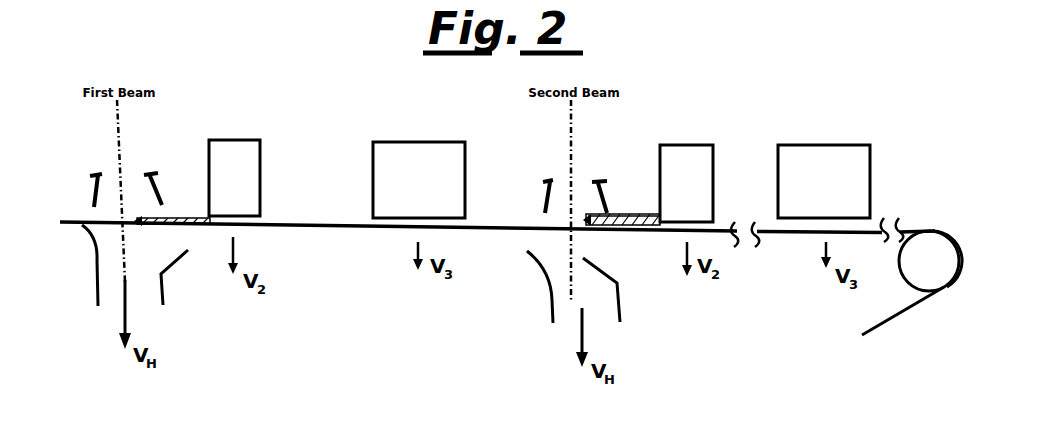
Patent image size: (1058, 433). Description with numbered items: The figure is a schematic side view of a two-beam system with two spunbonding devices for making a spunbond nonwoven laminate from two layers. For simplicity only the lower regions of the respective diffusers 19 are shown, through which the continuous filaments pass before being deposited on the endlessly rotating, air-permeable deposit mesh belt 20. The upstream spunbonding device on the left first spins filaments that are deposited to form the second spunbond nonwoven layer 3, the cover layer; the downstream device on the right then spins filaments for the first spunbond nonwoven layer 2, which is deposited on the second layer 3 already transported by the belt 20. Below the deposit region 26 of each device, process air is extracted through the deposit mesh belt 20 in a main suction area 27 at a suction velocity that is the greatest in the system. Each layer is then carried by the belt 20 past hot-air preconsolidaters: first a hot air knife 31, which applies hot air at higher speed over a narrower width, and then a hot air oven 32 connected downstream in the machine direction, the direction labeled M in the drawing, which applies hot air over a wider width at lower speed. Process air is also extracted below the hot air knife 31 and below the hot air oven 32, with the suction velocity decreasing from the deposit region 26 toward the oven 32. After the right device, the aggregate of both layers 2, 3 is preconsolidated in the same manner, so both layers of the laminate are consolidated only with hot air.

The first spunbond nonwoven layer 2 is at (633, 218).
The second spunbond nonwoven layer 3 is at (173, 219).
The diffuser 19 is at (160, 181).
The deposit mesh belt 20 is at (60, 217).
The deposit region 26 is at (116, 211).
The main suction area 27 is at (107, 312).
The hot air knife 31 is at (241, 140).
The hot air oven 32 is at (404, 142).
The machine direction reference M is at (118, 137).